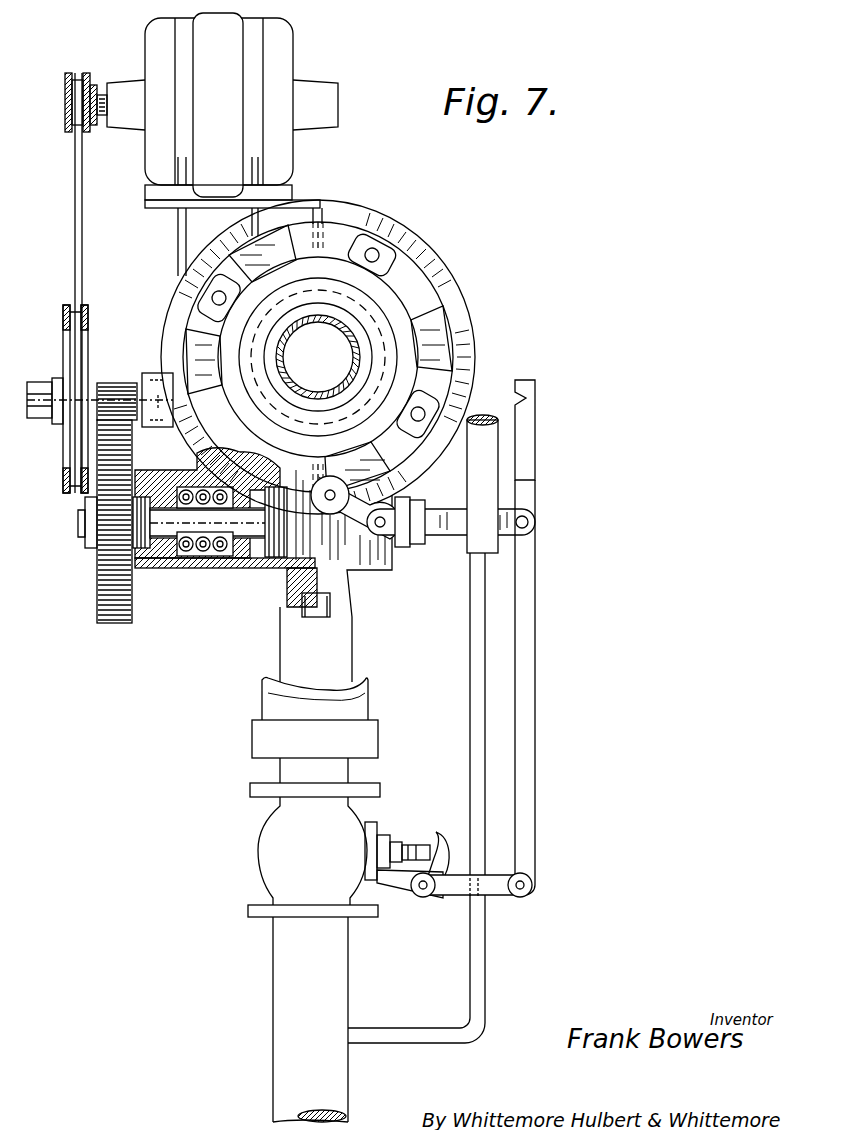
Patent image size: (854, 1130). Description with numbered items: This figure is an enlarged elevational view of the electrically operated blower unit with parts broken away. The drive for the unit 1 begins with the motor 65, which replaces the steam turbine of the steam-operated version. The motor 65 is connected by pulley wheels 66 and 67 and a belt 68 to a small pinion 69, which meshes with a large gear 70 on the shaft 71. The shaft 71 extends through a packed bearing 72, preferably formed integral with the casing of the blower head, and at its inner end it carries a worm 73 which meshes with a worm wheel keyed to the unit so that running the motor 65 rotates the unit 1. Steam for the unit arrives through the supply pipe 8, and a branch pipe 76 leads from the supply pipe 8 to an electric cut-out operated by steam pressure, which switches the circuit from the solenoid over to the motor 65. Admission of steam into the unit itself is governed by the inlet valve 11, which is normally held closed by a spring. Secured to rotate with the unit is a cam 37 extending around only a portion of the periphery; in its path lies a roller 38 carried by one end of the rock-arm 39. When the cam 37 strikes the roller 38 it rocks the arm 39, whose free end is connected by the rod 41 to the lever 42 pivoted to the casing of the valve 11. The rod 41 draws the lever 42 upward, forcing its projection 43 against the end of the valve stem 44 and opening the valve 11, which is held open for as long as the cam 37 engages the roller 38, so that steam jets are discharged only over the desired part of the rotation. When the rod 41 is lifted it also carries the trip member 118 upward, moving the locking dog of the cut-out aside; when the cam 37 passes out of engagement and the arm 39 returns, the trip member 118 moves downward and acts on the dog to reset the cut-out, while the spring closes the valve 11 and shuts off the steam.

The unit 1 is at (297, 338).
The supply pipe 8 is at (343, 935).
The inlet valve 11 is at (330, 830).
The cam 37 is at (400, 453).
The roller 38 is at (382, 478).
The rock-arm 39 is at (483, 512).
The rod 41 is at (527, 667).
The lever 42 is at (505, 875).
The projection 43 is at (445, 848).
The valve stem 44 is at (413, 845).
The motor 65 is at (288, 155).
The pulley wheel 66 is at (67, 133).
The pulley wheel 67 is at (86, 330).
The belt 68 is at (84, 207).
The pinion 69 is at (117, 385).
The gear 70 is at (118, 612).
The shaft 71 is at (192, 560).
The packed bearing 72 is at (233, 560).
The worm 73 is at (313, 560).
The branch pipe 76 is at (473, 683).
The trip member 118 is at (527, 443).